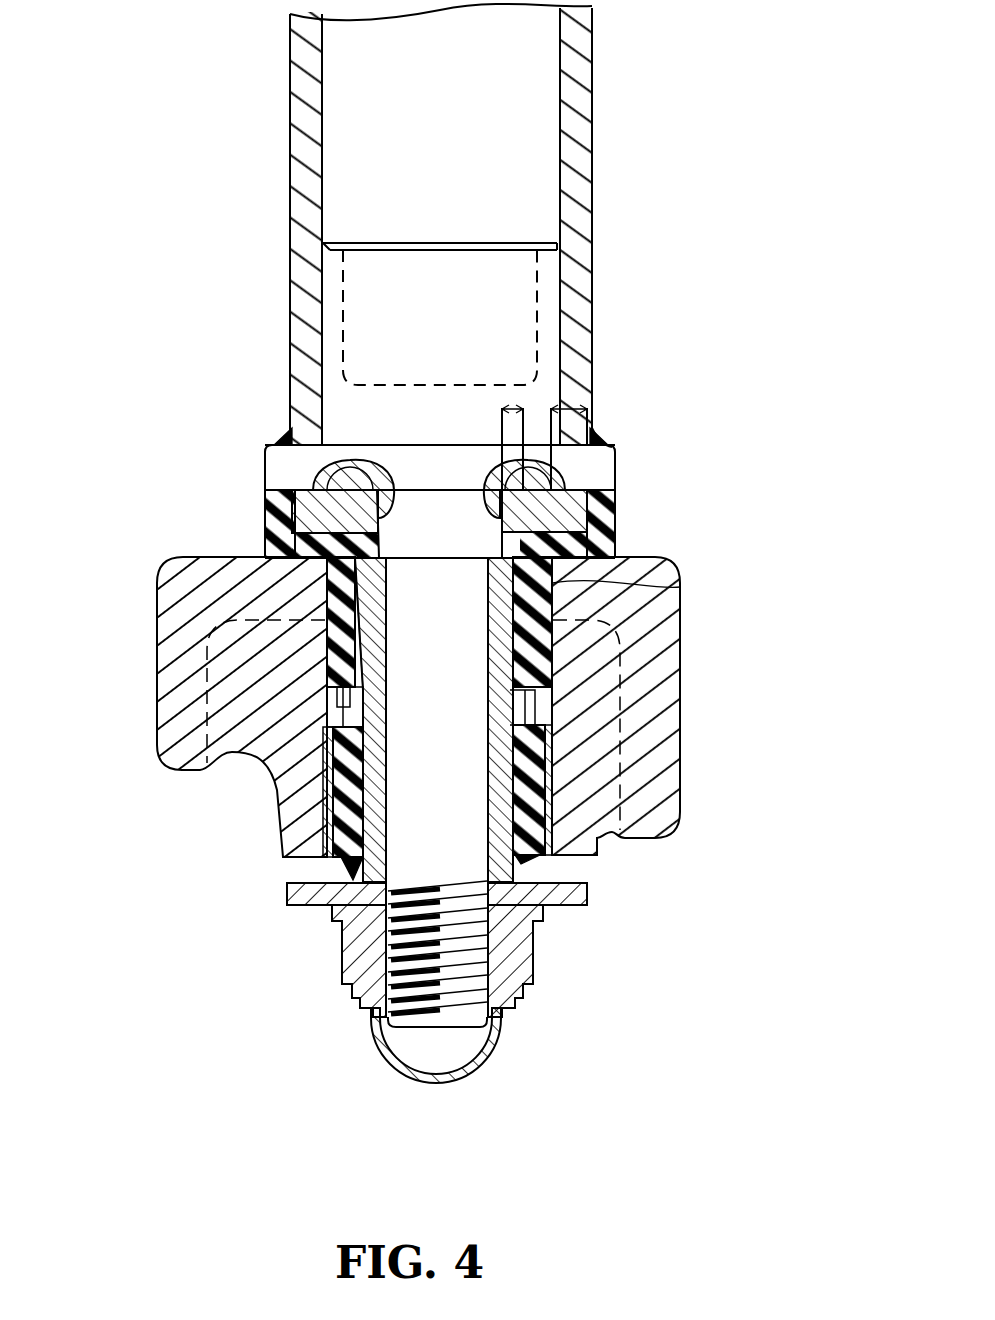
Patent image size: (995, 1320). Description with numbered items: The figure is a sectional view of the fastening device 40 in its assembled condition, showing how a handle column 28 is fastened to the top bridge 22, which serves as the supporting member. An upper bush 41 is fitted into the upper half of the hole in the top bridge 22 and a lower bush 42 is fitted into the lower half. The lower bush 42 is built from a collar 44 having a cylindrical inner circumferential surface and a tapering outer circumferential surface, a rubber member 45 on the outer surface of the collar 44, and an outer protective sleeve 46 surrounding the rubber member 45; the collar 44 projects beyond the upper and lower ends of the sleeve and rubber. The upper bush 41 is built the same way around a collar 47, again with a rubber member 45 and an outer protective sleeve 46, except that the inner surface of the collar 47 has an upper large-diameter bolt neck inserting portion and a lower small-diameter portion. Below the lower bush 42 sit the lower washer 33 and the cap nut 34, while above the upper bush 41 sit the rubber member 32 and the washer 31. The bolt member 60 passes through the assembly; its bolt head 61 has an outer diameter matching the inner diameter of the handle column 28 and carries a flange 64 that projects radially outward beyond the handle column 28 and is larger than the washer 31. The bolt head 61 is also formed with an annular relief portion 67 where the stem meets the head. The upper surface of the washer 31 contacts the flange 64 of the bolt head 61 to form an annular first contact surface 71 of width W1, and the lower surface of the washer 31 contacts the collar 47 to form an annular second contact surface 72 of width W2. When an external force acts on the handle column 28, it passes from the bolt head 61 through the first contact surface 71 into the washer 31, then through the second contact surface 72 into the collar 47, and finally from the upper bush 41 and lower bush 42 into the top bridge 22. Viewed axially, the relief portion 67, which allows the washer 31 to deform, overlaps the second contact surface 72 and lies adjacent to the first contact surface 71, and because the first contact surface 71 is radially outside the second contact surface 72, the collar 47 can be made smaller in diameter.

The top bridge 22 is at (167, 683).
The handle column 28 is at (587, 142).
The washer 31 is at (333, 512).
The rubber member 32 is at (610, 542).
The lower washer 33 is at (590, 895).
The cap nut 34 is at (525, 968).
The fastening device 40 is at (176, 982).
The upper bush 41 is at (572, 644).
The lower bush 42 is at (572, 788).
The collar 44 is at (520, 867).
The rubber member 45 is at (230, 752).
The outer protective sleeve 46 is at (327, 640).
The collar 47 is at (505, 590).
The bolt member 60 is at (452, 708).
The bolt head 61 is at (395, 325).
The flange 64 is at (605, 448).
The annular relief portion 67 is at (335, 482).
The first contact surface 71 is at (577, 477).
The second contact surface 72 is at (612, 512).
The width of first contact surface W1 is at (568, 405).
The width of second contact surface W2 is at (512, 405).